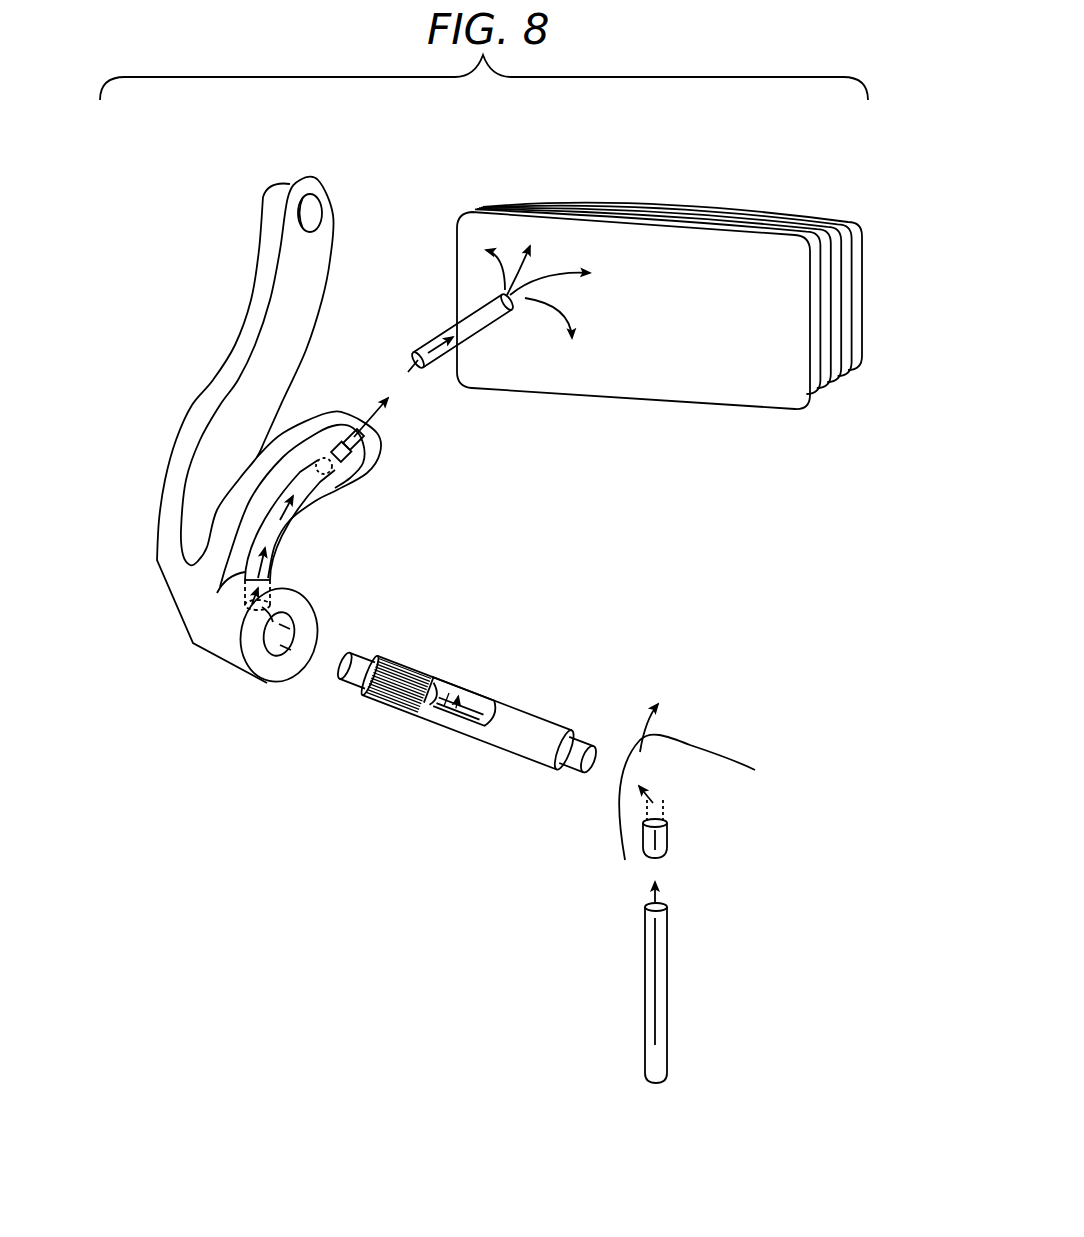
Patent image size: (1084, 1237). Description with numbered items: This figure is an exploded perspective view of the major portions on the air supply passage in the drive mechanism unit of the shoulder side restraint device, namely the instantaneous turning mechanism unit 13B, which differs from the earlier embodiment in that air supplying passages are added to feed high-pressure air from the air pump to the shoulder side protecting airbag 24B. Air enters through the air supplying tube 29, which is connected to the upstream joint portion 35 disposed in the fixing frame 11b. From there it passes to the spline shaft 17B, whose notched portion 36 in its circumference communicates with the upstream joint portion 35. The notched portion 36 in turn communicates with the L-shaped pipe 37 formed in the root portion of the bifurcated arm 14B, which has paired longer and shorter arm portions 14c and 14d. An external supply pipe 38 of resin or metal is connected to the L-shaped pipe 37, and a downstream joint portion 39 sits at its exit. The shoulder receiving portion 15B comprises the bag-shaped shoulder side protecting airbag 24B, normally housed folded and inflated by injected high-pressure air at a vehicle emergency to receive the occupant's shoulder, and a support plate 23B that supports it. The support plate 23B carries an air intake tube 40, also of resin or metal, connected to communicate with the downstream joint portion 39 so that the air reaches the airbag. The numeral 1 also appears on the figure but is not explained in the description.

The flow direction arrow 1 is at (644, 783).
The fixing frame 11b is at (685, 750).
The instantaneous turning mechanism unit 13B is at (291, 937).
The bifurcated arm 14B is at (274, 462).
The longer arm portion 14c is at (268, 258).
The shorter arm portion 14d is at (242, 487).
The shoulder receiving portion 15B is at (659, 306).
The spline shaft 17B is at (467, 712).
The support plate 23B is at (615, 374).
The shoulder side protecting airbag 24B is at (642, 205).
The air supplying tube 29 is at (663, 995).
The upstream joint portion 35 is at (667, 840).
The notched portion 36 is at (459, 738).
The L-shaped pipe 37 is at (279, 660).
The external supply pipe 38 is at (290, 505).
The downstream joint portion 39 is at (345, 447).
The air intake tube 40 is at (437, 332).